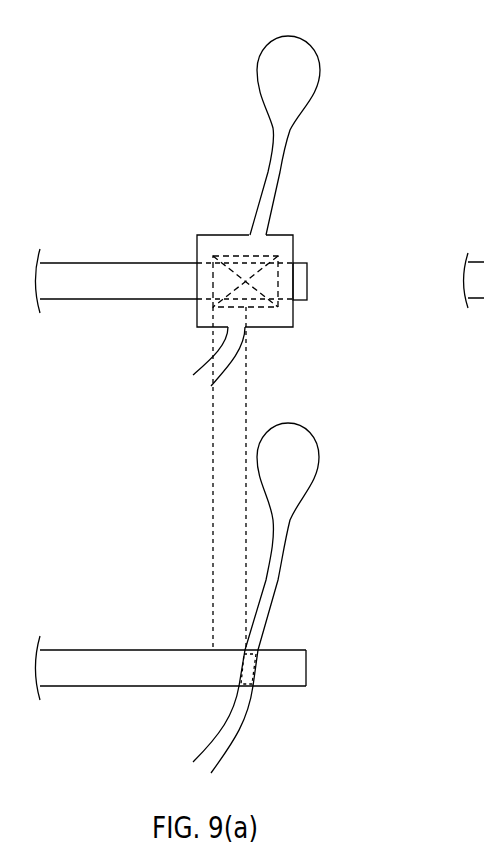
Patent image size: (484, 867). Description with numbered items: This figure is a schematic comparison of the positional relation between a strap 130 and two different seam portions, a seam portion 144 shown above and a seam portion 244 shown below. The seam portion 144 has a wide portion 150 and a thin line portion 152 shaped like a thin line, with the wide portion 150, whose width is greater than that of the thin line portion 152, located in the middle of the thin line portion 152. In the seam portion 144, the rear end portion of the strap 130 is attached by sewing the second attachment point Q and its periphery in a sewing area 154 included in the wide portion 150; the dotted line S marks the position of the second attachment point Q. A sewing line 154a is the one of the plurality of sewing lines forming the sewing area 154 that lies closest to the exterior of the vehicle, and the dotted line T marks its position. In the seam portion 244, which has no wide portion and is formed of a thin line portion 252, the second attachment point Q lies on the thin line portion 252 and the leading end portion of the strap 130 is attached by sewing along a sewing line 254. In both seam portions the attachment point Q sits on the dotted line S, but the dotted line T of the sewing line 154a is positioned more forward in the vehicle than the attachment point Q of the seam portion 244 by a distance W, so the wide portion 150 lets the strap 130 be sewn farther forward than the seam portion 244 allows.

The strap 130 is at (88, 262).
The seam portion 144 is at (312, 120).
The wide portion 150 is at (293, 242).
The thin line portion 152 is at (288, 165).
The sewing area 154 is at (221, 245).
The sewing line 154a is at (197, 280).
The seam portion 244 is at (312, 505).
The thin line portion 252 is at (287, 560).
The sewing line 254 is at (253, 688).